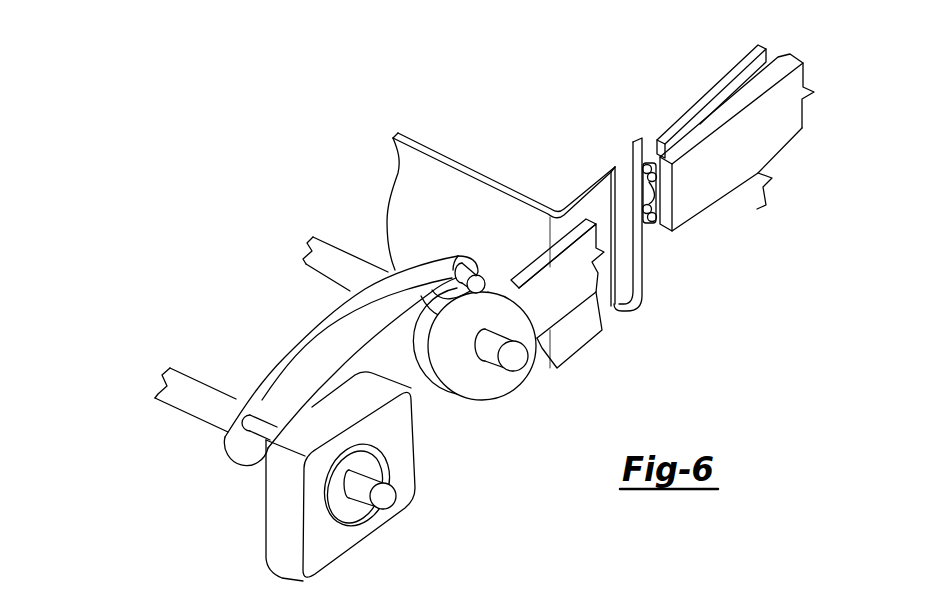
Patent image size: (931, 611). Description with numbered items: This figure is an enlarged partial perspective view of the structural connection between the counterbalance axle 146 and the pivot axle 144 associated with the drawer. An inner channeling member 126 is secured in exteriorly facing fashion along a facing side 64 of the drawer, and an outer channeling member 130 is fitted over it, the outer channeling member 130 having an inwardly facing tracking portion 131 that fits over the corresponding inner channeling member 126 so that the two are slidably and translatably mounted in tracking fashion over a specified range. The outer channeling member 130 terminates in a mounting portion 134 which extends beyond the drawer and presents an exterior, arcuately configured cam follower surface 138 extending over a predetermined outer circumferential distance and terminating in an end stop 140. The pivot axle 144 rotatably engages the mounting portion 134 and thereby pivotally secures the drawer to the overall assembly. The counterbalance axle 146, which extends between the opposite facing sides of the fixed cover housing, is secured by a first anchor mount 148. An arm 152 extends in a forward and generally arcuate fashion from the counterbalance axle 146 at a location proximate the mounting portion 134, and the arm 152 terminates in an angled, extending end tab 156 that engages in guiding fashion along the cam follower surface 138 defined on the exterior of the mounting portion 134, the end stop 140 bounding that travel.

The facing side 64 is at (684, 122).
The inner channeling member 126 is at (660, 195).
The outer channeling member 130 is at (575, 285).
The inwardly facing tracking portion 131 is at (657, 158).
The mounting portion 134 is at (474, 445).
The cam follower surface 138 is at (490, 284).
The end stop 140 is at (418, 383).
The pivot axle 144 is at (303, 262).
The counterbalance axle 146 is at (152, 377).
The first anchor mount 148 is at (316, 564).
The arm 152 is at (311, 350).
The end tab 156 is at (452, 256).